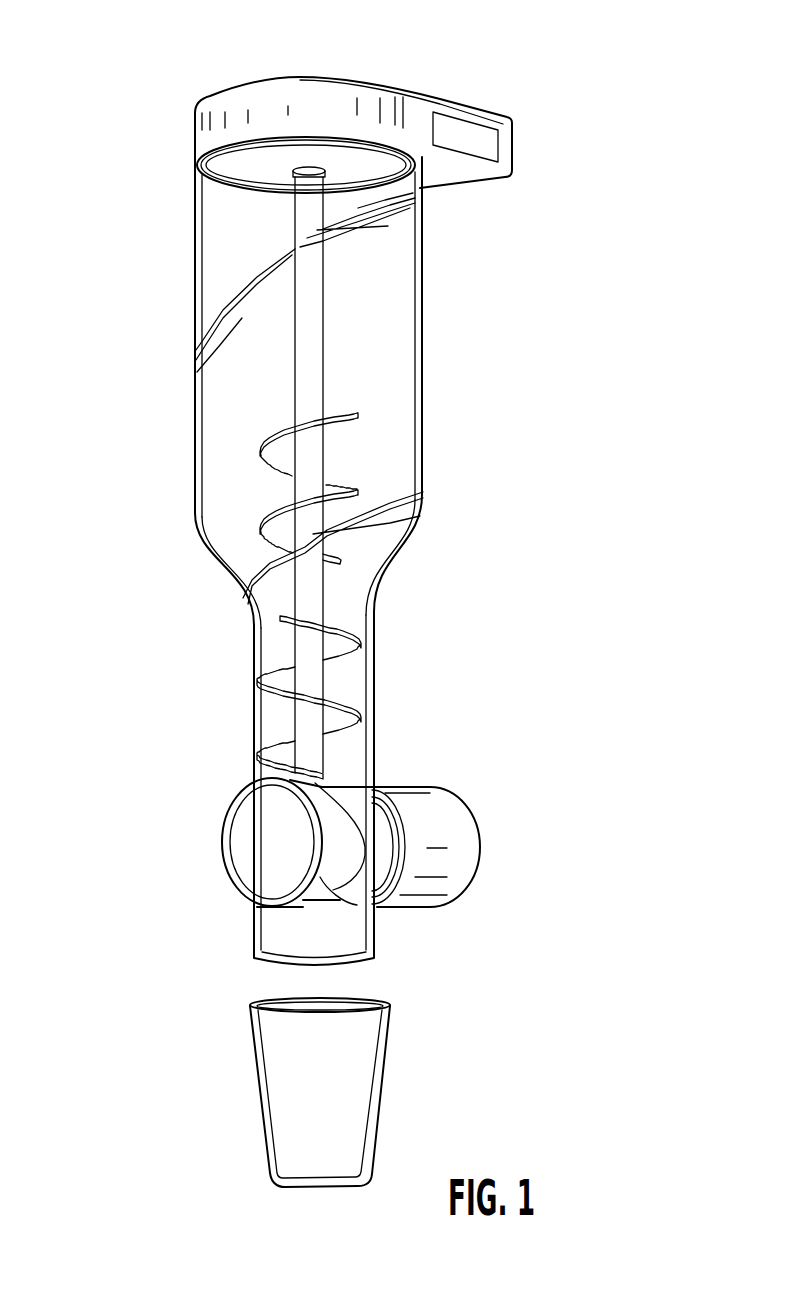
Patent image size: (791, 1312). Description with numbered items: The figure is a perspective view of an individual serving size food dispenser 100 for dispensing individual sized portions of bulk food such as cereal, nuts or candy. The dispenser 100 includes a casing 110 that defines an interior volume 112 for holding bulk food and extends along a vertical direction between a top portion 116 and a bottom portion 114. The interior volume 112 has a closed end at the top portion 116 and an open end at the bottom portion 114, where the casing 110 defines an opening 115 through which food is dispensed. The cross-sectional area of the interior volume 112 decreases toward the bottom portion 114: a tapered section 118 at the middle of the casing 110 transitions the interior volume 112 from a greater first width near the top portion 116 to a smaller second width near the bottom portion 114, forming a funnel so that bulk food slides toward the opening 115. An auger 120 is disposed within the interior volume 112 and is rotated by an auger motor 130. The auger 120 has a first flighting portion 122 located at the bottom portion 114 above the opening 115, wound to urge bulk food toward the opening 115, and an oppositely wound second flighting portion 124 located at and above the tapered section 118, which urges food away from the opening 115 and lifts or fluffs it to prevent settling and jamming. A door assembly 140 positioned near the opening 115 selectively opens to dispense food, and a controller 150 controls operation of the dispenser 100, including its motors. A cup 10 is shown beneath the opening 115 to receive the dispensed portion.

The individual serving size food dispenser 100 is at (176, 87).
The top portion 116 is at (196, 227).
The controller 150 is at (460, 118).
The auger motor 130 is at (262, 175).
The casing 110 is at (216, 422).
The interior volume 112 is at (392, 388).
The tapered section 118 is at (420, 567).
The bottom portion 114 is at (254, 934).
The opening 115 is at (362, 972).
The auger 120 is at (306, 338).
The second flighting portion 124 is at (274, 531).
The first flighting portion 122 is at (345, 654).
The door assembly 140 is at (218, 843).
The cup 10 is at (265, 1107).